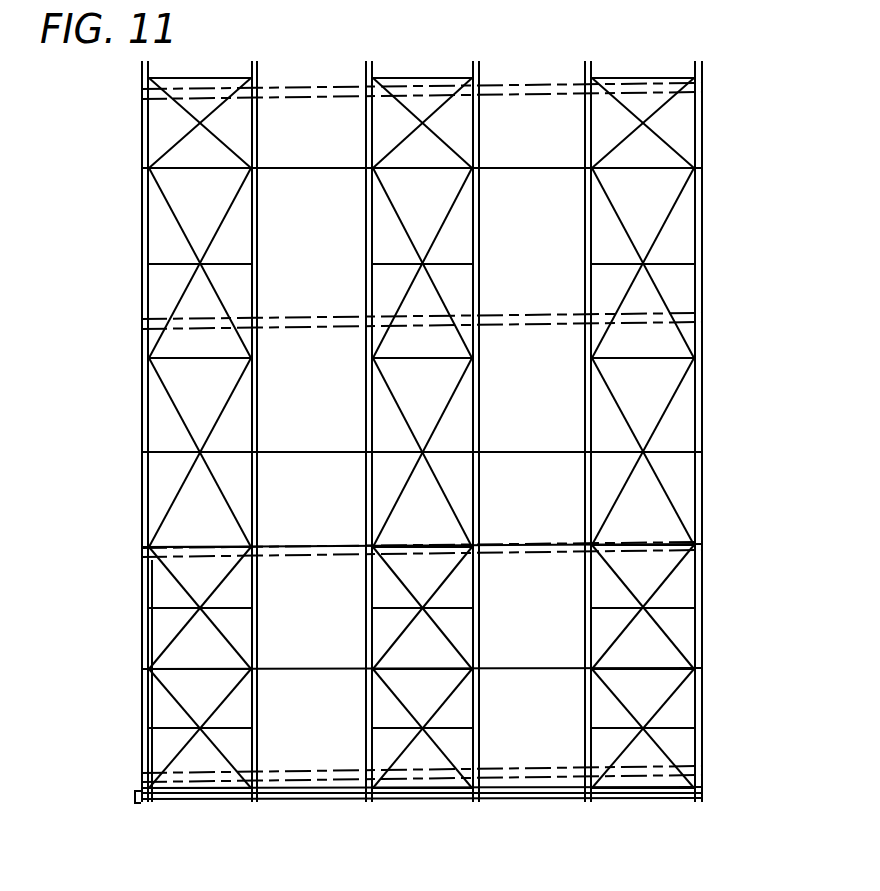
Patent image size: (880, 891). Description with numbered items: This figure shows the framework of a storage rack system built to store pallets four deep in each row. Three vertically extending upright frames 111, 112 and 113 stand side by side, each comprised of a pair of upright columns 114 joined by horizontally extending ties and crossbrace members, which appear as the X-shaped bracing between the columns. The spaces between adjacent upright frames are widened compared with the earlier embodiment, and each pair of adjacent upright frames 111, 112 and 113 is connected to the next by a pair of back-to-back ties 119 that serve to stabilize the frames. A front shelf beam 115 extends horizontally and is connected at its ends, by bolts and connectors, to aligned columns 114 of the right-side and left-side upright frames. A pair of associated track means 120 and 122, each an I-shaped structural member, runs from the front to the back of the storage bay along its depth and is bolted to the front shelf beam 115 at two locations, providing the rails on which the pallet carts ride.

The upright frame 111 is at (201, 69).
The upright frame 112 is at (436, 66).
The upright frame 113 is at (643, 64).
The upright column 114 is at (703, 195).
The front shelf beam 115 is at (141, 327).
The back-to-back ties 119 is at (313, 168).
The track means 120 is at (310, 547).
The track means 122 is at (422, 553).